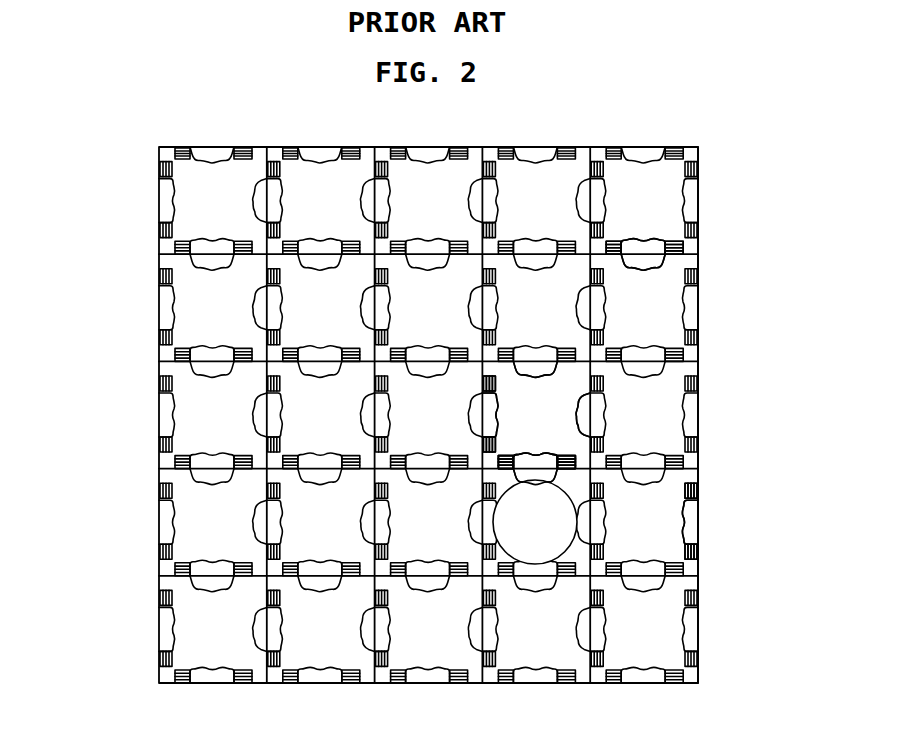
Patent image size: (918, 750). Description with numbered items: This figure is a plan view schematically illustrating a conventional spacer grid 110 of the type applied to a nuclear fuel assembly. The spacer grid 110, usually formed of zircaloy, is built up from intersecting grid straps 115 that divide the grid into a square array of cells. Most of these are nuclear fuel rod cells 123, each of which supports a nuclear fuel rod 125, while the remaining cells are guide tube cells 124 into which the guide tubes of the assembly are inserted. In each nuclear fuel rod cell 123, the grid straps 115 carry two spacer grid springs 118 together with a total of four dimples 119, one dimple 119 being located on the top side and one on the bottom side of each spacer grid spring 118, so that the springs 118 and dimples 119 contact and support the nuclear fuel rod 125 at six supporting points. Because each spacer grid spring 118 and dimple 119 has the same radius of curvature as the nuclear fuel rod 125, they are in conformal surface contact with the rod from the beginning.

The spacer grid 110 is at (130, 375).
The grid strap 115 is at (698, 475).
The spacer grid spring 118 is at (653, 248).
The dimple 119 is at (658, 262).
The nuclear fuel rod cell 123 is at (575, 480).
The guide tube cell 124 is at (537, 420).
The nuclear fuel rod 125 is at (537, 530).